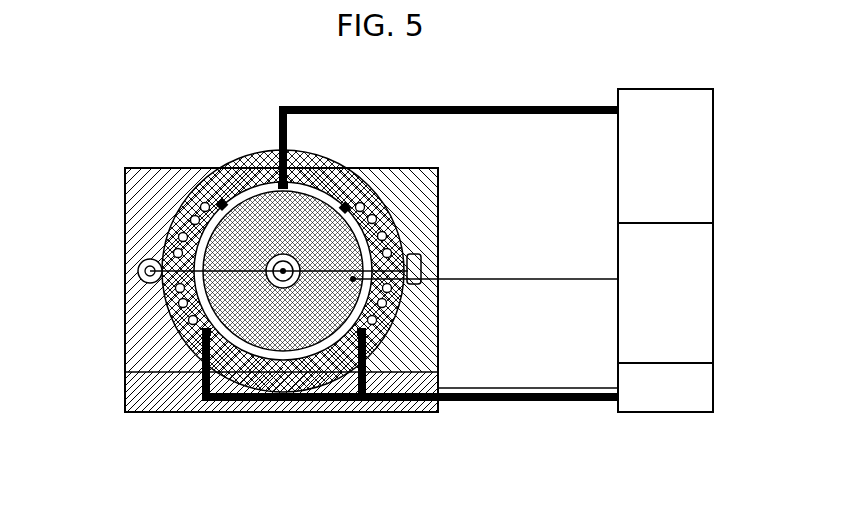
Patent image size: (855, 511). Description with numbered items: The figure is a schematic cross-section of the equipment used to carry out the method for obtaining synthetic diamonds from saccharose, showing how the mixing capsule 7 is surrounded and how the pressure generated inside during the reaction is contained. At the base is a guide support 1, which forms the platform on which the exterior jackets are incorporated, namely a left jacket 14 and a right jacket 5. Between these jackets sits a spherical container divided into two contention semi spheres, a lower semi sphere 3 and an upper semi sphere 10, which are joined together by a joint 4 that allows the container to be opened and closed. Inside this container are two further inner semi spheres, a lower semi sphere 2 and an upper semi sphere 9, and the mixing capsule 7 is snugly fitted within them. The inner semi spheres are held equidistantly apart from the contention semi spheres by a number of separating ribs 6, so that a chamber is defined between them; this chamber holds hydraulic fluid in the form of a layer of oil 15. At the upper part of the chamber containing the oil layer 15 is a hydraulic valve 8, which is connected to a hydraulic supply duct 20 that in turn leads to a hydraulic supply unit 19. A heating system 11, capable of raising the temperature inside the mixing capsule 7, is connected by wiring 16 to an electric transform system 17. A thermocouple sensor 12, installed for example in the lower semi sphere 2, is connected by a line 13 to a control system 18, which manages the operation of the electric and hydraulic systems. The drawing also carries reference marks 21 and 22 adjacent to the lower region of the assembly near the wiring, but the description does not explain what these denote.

The guide support 1 is at (125, 400).
The lower semi sphere 2 is at (255, 285).
The lower semi sphere 3 is at (160, 290).
The joint 4 is at (128, 262).
The right jacket 5 is at (125, 187).
The separating ribs 6 is at (162, 168).
The mixing capsule 7 is at (213, 172).
The hydraulic valve 8 is at (263, 150).
The upper semi sphere 9 is at (350, 172).
The upper semi sphere 10 is at (362, 188).
The heating system 11 is at (390, 222).
The thermocouple sensor 12 is at (417, 250).
The line 13 is at (482, 278).
The left jacket 14 is at (440, 307).
The layer of oil 15 is at (328, 412).
The wiring 16 is at (517, 405).
The electric transform system 17 is at (667, 393).
The control system 18 is at (667, 257).
The hydraulic supply unit 19 is at (667, 162).
The hydraulic supply duct 20 is at (520, 103).
The block side wall 21 is at (438, 362).
The left lead wire 22 is at (254, 412).